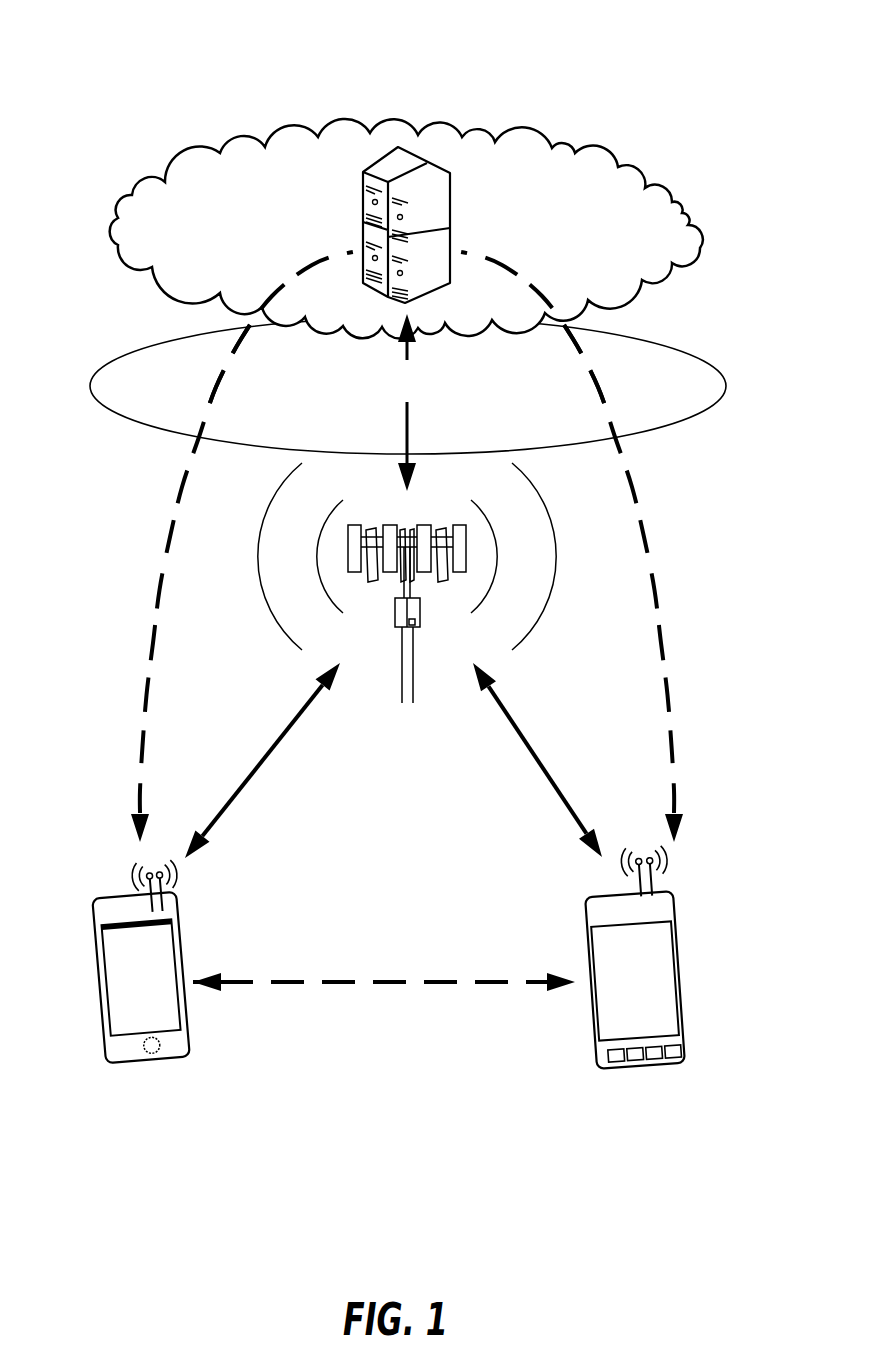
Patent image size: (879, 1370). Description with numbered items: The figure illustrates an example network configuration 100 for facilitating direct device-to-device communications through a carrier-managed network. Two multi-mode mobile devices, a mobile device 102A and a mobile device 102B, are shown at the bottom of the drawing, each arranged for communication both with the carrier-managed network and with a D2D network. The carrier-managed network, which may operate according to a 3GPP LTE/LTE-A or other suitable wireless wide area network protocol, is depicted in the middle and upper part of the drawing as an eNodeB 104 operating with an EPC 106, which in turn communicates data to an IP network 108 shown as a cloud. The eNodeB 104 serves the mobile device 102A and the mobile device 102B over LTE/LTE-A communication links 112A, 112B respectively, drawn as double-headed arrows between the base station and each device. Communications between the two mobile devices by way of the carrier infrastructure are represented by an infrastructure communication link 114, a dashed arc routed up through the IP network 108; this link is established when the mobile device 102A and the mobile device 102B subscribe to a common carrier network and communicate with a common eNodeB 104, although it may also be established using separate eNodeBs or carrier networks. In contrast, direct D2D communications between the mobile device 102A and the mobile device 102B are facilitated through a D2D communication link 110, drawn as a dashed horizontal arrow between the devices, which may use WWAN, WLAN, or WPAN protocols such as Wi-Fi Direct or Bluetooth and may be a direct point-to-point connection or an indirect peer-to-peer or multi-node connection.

The network configuration 100 is at (130, 66).
The mobile device 102A is at (188, 1044).
The mobile device 102B is at (685, 1061).
The eNodeB 104 is at (420, 615).
The EPC 106 is at (712, 406).
The IP network 108 is at (700, 246).
The D2D communication link 110 is at (380, 984).
The LTE/LTE-A communication link 112A is at (247, 783).
The LTE/LTE-A communication link 112B is at (573, 803).
The infrastructure communication link 114 is at (152, 650).